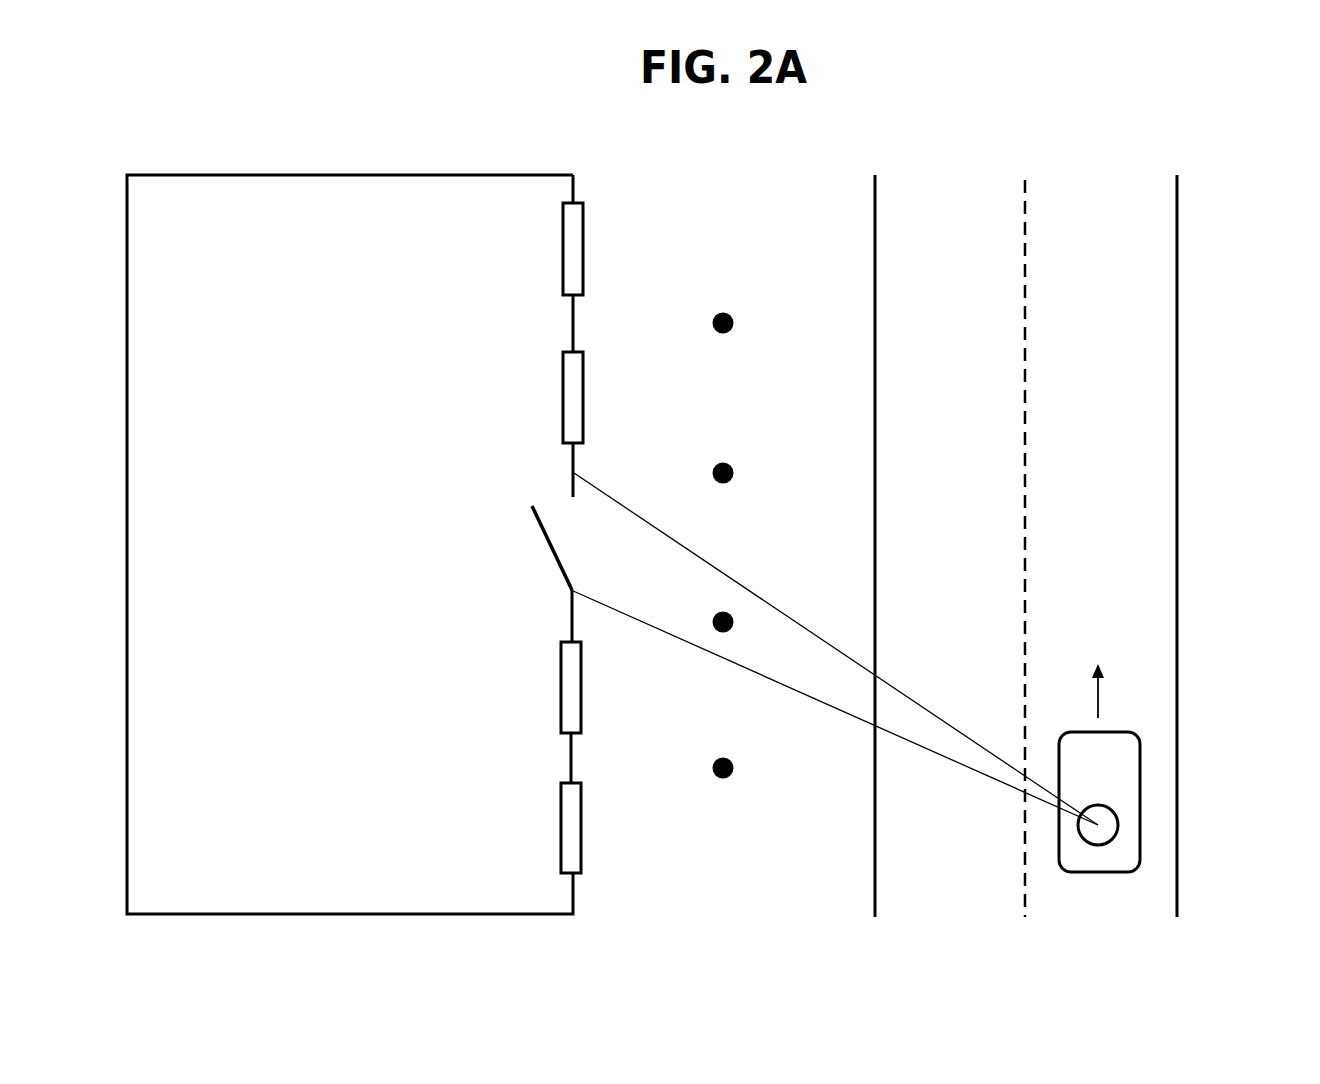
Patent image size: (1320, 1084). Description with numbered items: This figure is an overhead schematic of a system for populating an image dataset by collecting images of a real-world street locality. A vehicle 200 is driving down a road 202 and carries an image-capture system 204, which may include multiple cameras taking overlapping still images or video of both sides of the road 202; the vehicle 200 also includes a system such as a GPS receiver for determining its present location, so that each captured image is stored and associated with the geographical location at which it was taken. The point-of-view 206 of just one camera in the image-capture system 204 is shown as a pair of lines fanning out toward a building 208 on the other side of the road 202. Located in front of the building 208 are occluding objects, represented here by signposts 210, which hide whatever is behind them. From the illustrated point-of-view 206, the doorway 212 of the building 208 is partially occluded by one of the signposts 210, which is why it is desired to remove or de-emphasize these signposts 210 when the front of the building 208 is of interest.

The vehicle 200 is at (1114, 759).
The road 202 is at (1026, 546).
The image-capture system 204 is at (1101, 829).
The point-of-view 206 is at (835, 682).
The building 208 is at (390, 554).
The signposts 210 is at (703, 613).
The doorway 212 is at (580, 548).